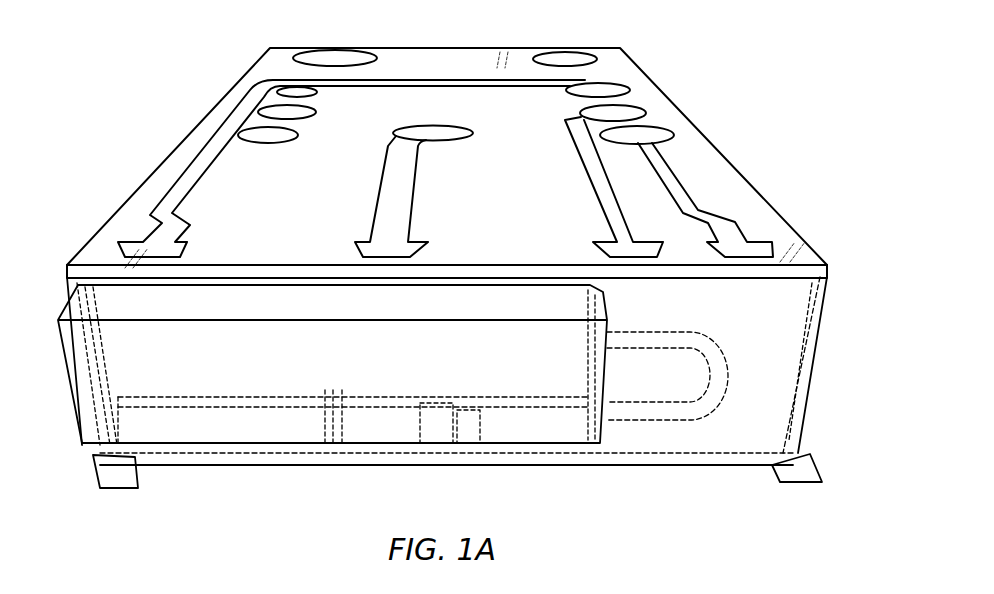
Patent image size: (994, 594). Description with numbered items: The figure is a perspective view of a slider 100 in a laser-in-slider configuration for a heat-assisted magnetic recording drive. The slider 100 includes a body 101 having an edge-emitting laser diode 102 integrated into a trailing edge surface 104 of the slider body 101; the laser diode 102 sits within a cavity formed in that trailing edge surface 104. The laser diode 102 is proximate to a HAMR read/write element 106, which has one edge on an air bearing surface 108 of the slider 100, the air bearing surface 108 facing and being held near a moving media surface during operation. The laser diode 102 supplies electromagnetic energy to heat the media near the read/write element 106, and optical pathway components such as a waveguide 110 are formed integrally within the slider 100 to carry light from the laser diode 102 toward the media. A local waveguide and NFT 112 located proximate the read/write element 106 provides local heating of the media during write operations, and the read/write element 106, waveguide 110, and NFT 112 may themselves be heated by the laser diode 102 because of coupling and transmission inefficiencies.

The slider 100 is at (717, 87).
The slider body 101 is at (115, 215).
The edge-emitting laser diode 102 is at (95, 413).
The trailing edge surface 104 is at (123, 490).
The HAMR read/write element 106 is at (460, 452).
The air bearing surface 108 is at (813, 483).
The waveguide 110 is at (668, 413).
The local waveguide and NFT 112 is at (443, 453).